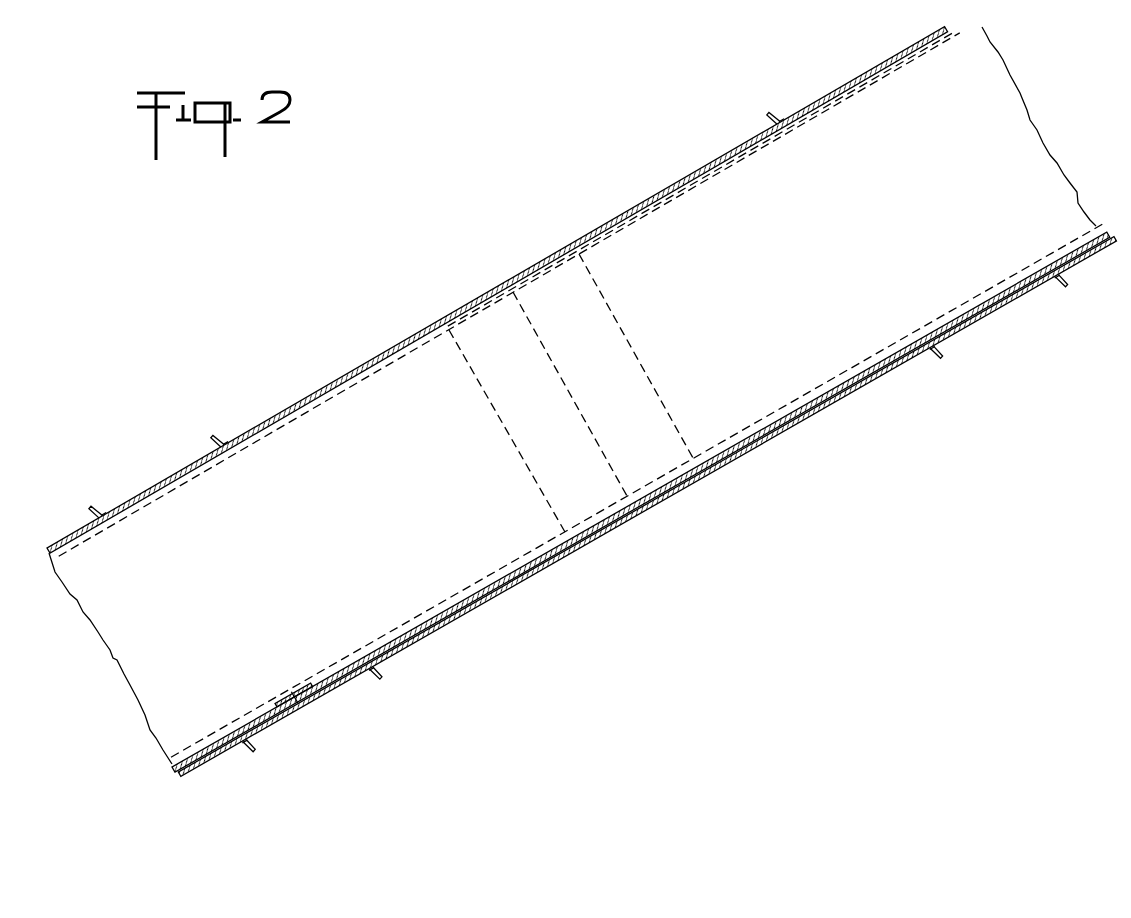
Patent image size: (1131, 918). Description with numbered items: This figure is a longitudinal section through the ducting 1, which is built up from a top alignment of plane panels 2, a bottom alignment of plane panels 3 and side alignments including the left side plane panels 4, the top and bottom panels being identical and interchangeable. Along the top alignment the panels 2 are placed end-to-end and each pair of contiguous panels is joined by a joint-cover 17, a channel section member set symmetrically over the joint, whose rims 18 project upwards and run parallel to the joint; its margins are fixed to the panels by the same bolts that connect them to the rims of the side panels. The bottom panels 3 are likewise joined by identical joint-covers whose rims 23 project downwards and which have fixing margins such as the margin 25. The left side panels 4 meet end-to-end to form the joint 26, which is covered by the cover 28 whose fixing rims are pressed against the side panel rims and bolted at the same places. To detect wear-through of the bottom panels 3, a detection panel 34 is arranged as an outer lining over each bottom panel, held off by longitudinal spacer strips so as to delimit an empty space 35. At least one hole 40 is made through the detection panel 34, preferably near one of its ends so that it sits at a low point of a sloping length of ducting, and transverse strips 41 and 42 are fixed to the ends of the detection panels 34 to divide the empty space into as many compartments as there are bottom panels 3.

The ducting 1 is at (360, 350).
The top alignment plane panel 2 is at (318, 393).
The bottom alignment plane panel 3 is at (193, 747).
The left side alignment plane panel 4 is at (125, 640).
The joint-cover 17 is at (492, 284).
The rim 18 is at (88, 507).
The rim 23 is at (615, 518).
The fixing margin 25 is at (337, 700).
The joint of left side panels 26 is at (567, 385).
The cover 28 is at (621, 327).
The detection panel 34 is at (639, 495).
The empty space 35 is at (636, 493).
The hole 40 is at (639, 495).
The transverse strip 41 is at (273, 710).
The transverse strip 42 is at (239, 721).